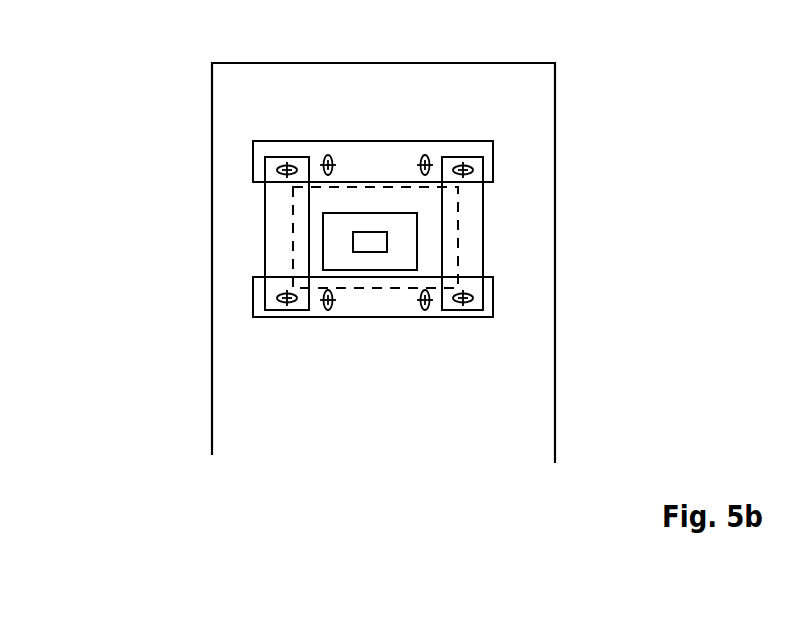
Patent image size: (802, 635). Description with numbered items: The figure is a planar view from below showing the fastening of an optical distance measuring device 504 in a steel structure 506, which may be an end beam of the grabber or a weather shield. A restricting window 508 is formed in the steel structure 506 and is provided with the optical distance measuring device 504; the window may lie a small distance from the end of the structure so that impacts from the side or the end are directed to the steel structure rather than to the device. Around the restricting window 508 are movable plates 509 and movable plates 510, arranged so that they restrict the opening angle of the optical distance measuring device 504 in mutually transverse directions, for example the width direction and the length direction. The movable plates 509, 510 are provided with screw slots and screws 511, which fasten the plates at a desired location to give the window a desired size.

The optical distance measuring device 504 is at (417, 257).
The steel structure 506 is at (184, 99).
The restricting window 508 is at (383, 187).
The movable plates 509 is at (290, 157).
The movable plates 510 is at (258, 142).
The screws 511 is at (463, 302).